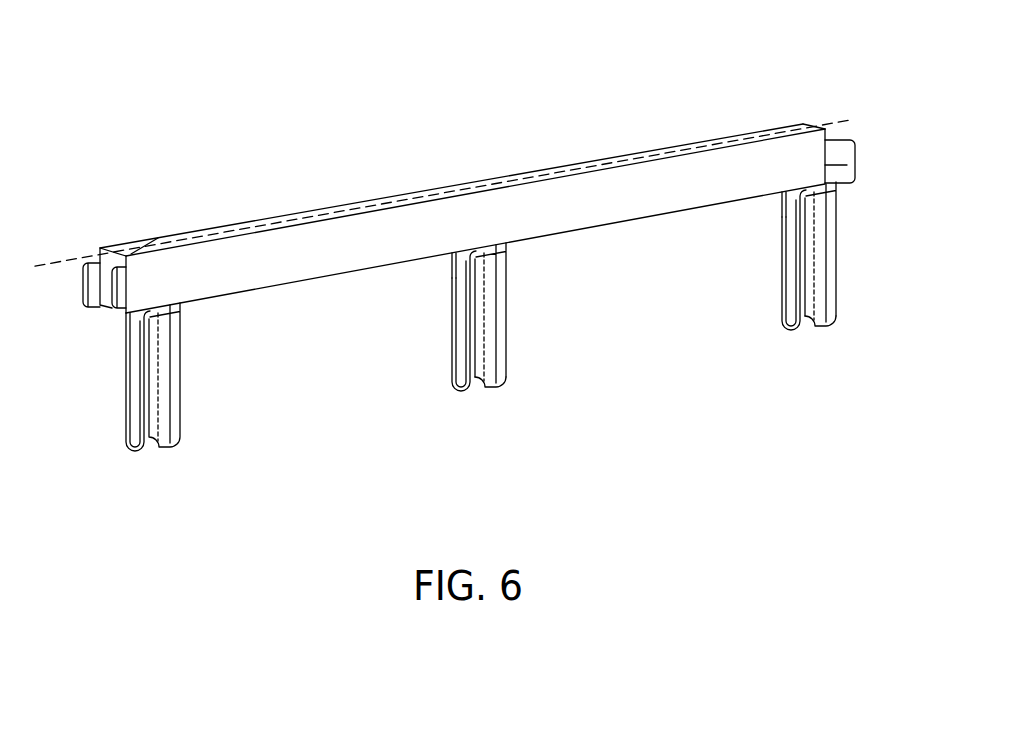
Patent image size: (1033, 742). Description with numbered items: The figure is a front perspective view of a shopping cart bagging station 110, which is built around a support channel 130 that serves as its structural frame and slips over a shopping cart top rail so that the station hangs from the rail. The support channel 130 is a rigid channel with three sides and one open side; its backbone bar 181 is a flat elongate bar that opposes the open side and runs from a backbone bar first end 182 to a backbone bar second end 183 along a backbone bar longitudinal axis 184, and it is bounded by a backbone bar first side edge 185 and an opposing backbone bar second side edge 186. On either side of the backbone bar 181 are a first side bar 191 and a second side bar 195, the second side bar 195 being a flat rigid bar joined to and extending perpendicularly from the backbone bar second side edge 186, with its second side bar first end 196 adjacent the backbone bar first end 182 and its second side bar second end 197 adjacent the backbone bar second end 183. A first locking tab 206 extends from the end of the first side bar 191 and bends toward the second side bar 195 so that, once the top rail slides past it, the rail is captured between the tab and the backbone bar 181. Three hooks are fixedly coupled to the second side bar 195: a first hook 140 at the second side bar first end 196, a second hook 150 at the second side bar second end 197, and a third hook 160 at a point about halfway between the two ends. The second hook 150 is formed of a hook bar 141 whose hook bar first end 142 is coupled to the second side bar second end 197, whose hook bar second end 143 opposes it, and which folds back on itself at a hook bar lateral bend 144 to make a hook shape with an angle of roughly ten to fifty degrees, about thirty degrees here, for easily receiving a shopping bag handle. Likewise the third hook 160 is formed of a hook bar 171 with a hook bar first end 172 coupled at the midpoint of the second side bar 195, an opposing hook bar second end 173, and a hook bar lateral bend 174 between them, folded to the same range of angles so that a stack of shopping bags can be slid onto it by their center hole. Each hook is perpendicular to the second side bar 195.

The shopping cart bagging station 110 is at (340, 60).
The support channel 130 is at (443, 175).
The first hook 140 is at (156, 422).
The hook bar 141 is at (764, 260).
The hook bar first end 142 is at (750, 213).
The hook bar second end 143 is at (838, 252).
The hook bar lateral bend 144 is at (790, 347).
The second hook 150 is at (793, 296).
The third hook 160 is at (480, 351).
The hook bar 171 is at (433, 321).
The hook bar first end 172 is at (429, 273).
The hook bar second end 173 is at (523, 313).
The hook bar lateral bend 174 is at (454, 418).
The backbone bar 181 is at (375, 195).
The backbone bar first end 182 is at (143, 247).
The backbone bar second end 183 is at (795, 125).
The backbone bar longitudinal axis 184 is at (827, 122).
The backbone bar first side edge 185 is at (127, 243).
The backbone bar second side edge 186 is at (555, 173).
The first side bar 191 is at (107, 300).
The second side bar 195 is at (383, 250).
The second side bar first end 196 is at (128, 259).
The second side bar second end 197 is at (853, 167).
The first locking tab 206 is at (92, 290).